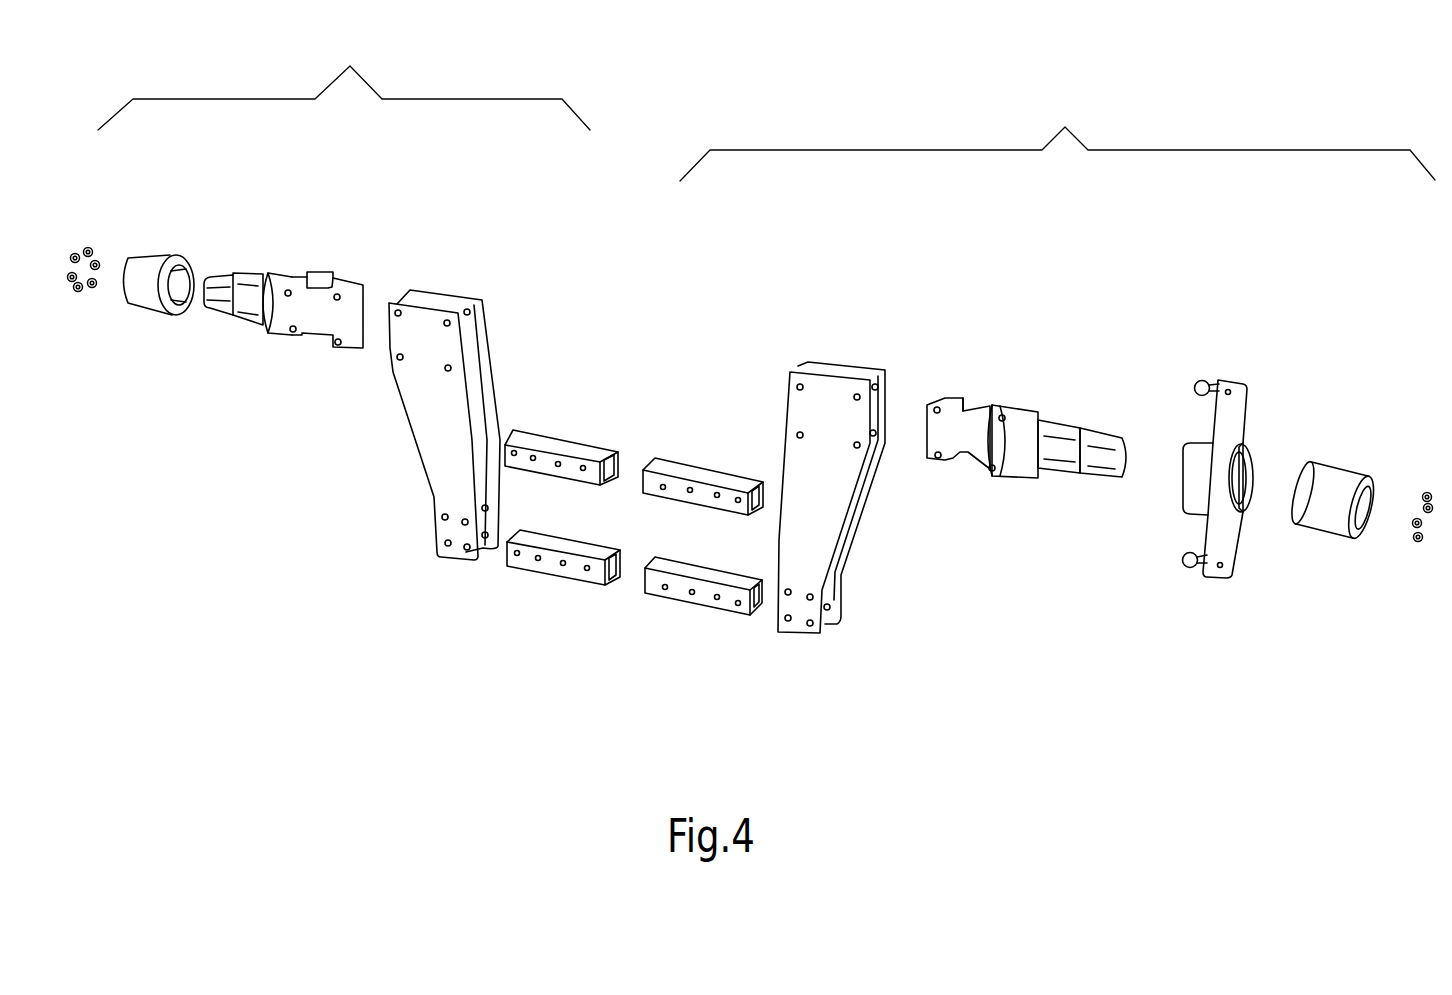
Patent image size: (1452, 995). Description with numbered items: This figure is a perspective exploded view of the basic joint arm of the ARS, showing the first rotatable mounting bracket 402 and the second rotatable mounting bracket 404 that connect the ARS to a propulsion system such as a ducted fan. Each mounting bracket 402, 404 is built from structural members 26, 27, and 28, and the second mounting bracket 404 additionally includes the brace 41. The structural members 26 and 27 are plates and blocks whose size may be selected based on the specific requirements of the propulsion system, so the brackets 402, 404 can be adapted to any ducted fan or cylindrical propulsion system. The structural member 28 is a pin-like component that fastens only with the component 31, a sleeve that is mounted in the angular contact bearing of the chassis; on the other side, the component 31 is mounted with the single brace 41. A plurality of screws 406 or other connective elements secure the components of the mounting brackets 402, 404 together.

The first rotatable mounting bracket 402 is at (344, 85).
The second rotatable mounting bracket 404 is at (1057, 141).
The screws 406 is at (90, 252).
The component 31 is at (153, 270).
The structural member 28 is at (1020, 432).
The structural member 27 is at (425, 367).
The structural member 26 is at (567, 465).
The brace 41 is at (1230, 418).